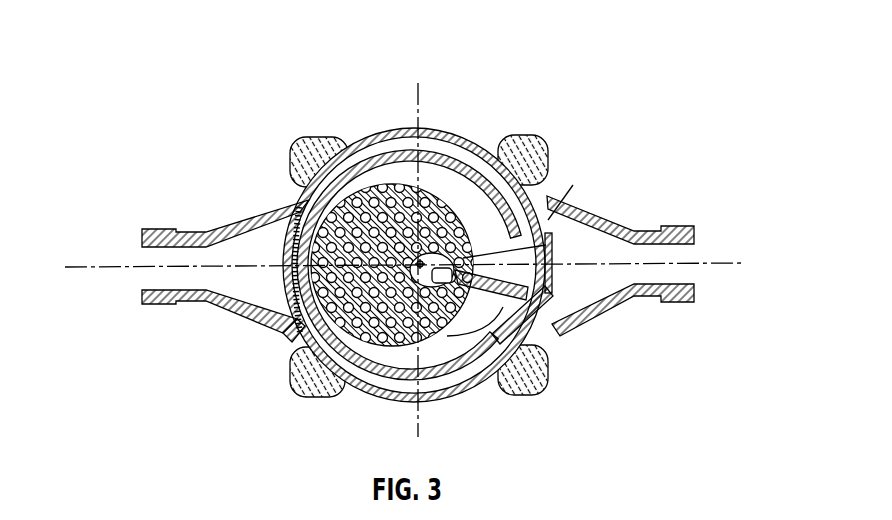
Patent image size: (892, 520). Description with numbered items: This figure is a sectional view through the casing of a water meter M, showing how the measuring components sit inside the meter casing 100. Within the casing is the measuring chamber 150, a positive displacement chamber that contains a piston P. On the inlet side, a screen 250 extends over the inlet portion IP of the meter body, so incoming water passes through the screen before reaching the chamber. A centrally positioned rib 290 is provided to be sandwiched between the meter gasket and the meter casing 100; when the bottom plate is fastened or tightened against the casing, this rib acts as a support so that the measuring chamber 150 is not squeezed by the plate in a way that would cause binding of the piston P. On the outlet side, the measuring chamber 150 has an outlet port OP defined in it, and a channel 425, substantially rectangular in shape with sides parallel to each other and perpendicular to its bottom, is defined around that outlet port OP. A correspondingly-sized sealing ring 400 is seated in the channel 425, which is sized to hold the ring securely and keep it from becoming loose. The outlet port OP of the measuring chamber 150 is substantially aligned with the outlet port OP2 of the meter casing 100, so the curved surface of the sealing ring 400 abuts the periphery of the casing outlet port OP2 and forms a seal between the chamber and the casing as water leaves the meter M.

The meter casing 100 is at (357, 133).
The measuring chamber 150 is at (413, 152).
The screen 250 is at (300, 213).
The centrally positioned rib 290 is at (300, 272).
The sealing ring 400 is at (540, 245).
The channel 425 is at (563, 275).
The inlet portion IP is at (300, 265).
The outlet port OP is at (552, 244).
The outlet port of the meter casing OP2 is at (563, 274).
The meter M is at (318, 128).
The piston P is at (460, 217).